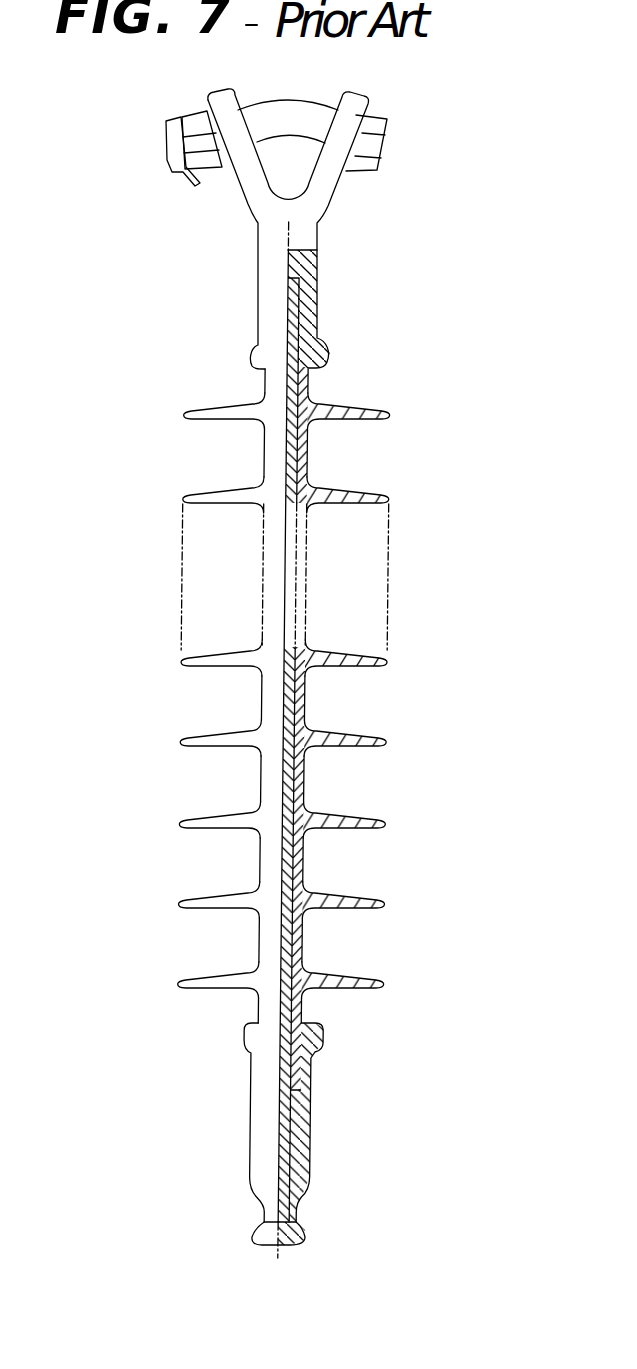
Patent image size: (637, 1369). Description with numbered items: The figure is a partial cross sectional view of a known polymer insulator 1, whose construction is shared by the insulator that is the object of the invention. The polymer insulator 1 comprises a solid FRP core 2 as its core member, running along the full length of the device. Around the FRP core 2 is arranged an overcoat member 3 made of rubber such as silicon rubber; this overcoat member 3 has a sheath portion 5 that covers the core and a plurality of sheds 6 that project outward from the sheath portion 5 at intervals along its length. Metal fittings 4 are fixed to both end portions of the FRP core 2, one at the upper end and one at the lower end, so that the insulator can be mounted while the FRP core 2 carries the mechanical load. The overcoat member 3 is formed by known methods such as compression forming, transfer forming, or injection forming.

The polymer insulator 1 is at (337, 388).
The FRP core 2 is at (303, 793).
The overcoat member 3 is at (448, 690).
The metal fittings 4 is at (318, 267).
The sheath portion 5 is at (302, 703).
The sheds 6 is at (381, 652).